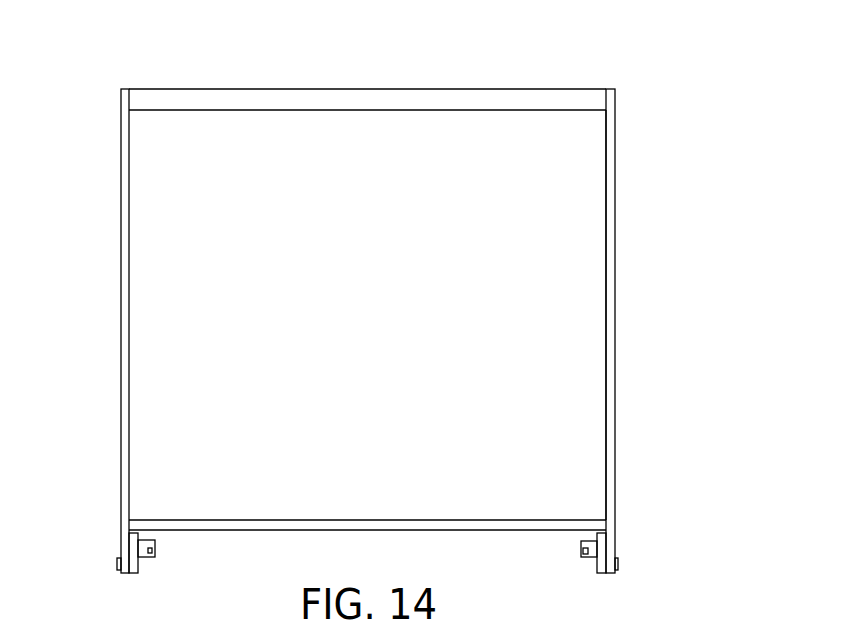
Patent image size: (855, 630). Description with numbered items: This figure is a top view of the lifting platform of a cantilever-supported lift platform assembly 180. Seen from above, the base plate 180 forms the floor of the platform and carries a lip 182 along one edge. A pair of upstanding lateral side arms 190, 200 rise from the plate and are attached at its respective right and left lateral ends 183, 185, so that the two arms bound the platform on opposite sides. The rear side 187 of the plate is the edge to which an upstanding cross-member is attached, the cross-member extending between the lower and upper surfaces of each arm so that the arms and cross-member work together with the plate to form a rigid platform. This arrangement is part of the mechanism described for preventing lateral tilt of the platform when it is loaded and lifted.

The base plate 180 is at (392, 331).
The lip 182 is at (413, 103).
The right lateral end 183 is at (598, 72).
The left lateral end 185 is at (125, 72).
The rear side 187 is at (628, 525).
The upstanding lateral side arm 190 is at (614, 432).
The upstanding lateral side arm 200 is at (129, 520).